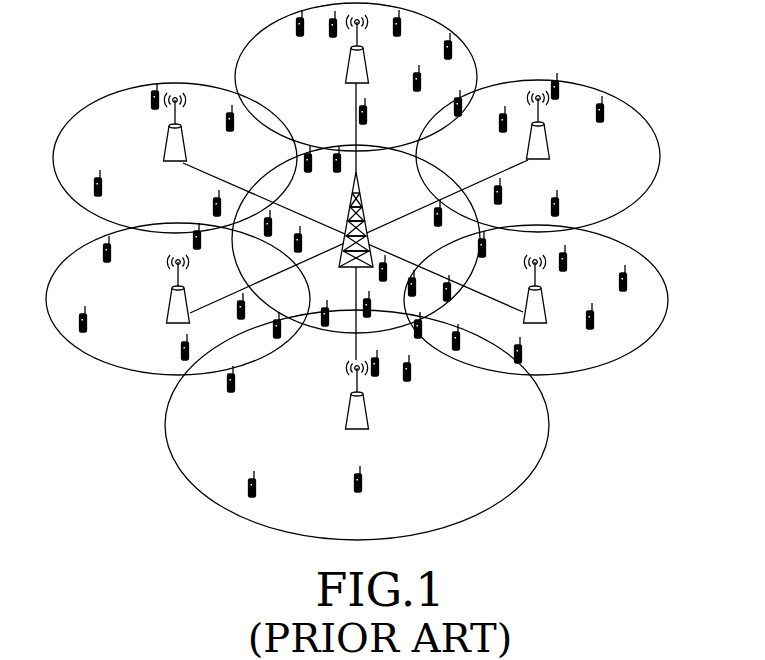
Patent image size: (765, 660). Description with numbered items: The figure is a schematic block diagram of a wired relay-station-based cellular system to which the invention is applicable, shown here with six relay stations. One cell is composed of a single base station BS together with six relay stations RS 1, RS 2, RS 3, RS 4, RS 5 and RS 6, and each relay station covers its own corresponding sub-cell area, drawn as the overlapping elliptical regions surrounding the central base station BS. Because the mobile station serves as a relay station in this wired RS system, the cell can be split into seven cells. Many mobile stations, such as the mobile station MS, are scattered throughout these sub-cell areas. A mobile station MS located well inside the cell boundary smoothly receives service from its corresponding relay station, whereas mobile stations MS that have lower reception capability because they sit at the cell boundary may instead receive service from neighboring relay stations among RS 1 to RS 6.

The base station BS is at (355, 221).
The relay station RS 1 is at (357, 425).
The relay station RS 2 is at (536, 300).
The relay station RS 3 is at (538, 156).
The relay station RS 4 is at (356, 77).
The relay station RS 5 is at (175, 158).
The relay station RS 6 is at (178, 299).
The mobile station MS is at (353, 253).